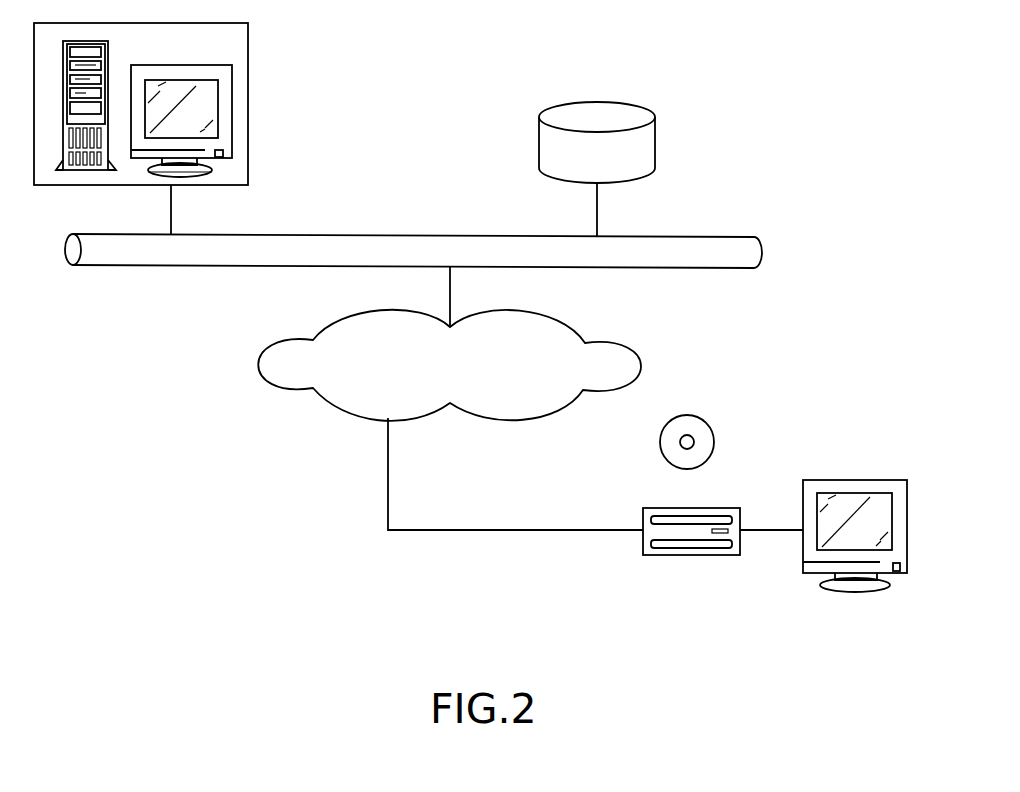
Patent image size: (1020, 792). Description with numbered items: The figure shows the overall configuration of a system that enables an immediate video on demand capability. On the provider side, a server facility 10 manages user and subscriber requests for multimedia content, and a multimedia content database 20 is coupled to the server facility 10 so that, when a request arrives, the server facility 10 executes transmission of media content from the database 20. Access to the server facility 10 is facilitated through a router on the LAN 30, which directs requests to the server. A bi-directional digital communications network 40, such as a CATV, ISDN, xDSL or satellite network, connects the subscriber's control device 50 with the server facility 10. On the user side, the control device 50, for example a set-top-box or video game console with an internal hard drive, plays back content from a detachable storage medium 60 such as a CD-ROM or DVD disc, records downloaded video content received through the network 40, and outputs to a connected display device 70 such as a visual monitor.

The server facility 10 is at (248, 72).
The multimedia content database 20 is at (655, 133).
The LAN 30 is at (415, 234).
The network 40 is at (630, 350).
The control device 50 is at (713, 505).
The detachable storage medium 60 is at (713, 428).
The display device 70 is at (832, 480).